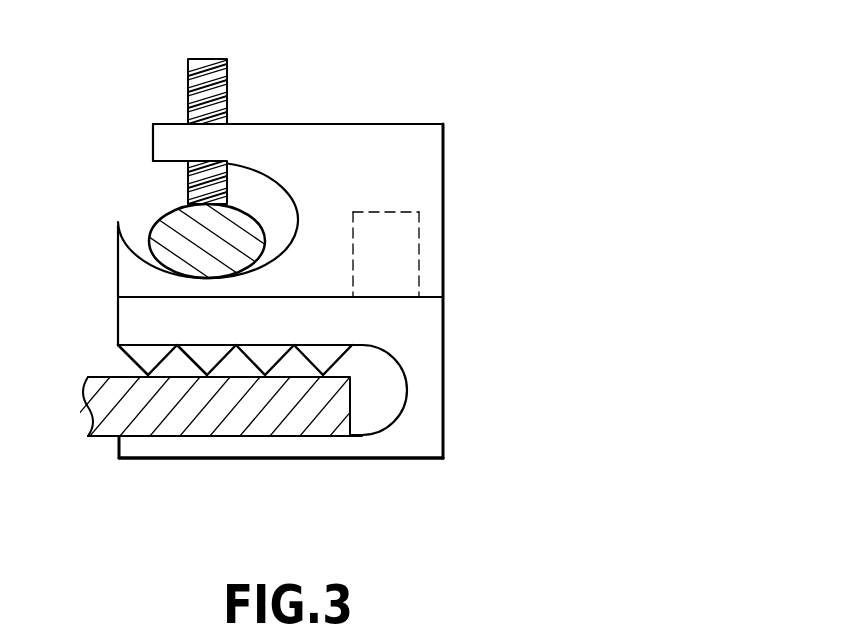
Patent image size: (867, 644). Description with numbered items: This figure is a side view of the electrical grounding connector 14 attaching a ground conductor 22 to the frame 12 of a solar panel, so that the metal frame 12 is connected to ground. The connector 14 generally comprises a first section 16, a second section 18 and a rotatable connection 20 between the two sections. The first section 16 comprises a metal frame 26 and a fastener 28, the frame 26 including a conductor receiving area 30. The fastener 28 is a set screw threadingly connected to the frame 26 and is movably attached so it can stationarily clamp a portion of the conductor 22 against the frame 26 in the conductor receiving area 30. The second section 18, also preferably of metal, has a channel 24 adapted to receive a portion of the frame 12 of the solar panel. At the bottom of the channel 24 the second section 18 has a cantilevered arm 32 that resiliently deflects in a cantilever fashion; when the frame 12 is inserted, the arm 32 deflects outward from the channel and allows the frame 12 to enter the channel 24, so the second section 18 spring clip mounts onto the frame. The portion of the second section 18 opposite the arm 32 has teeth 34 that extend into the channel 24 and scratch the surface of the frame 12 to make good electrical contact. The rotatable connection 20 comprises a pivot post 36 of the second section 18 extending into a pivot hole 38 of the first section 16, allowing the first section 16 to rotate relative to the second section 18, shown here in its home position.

The frame 12 is at (107, 417).
The electrical grounding connector 14 is at (445, 142).
The first section 16 is at (335, 122).
The second section 18 is at (446, 397).
The rotatable connection 20 is at (420, 267).
The ground conductor 22 is at (172, 217).
The channel 24 is at (382, 413).
The frame 26 is at (423, 122).
The fastener 28 is at (188, 73).
The conductor receiving area 30 is at (252, 186).
The cantilevered arm 32 is at (217, 450).
The teeth 34 is at (147, 365).
The pivot post 36 is at (385, 257).
The pivot hole 38 is at (410, 212).